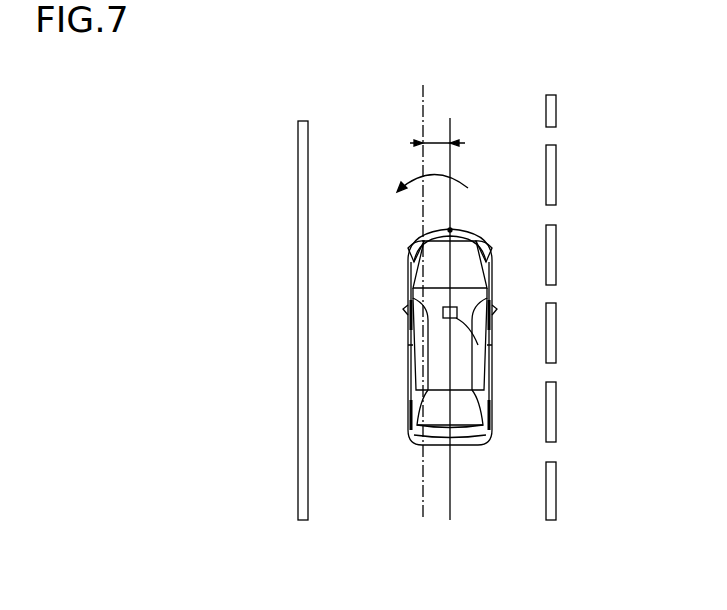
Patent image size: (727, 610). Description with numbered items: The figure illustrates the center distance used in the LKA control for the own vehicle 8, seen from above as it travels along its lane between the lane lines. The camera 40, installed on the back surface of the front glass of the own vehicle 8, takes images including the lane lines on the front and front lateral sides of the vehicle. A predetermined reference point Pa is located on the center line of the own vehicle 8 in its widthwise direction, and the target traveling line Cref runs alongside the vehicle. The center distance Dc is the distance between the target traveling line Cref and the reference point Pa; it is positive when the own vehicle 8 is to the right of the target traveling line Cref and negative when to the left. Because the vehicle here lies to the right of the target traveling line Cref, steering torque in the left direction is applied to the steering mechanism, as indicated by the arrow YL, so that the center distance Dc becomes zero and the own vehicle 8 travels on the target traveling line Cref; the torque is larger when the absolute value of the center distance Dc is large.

The own vehicle 8 is at (393, 349).
The camera 40 is at (478, 345).
The target traveling line Cref is at (426, 286).
The center distance Dc is at (437, 132).
The arrow YL is at (445, 175).
The reference point Pa is at (466, 219).